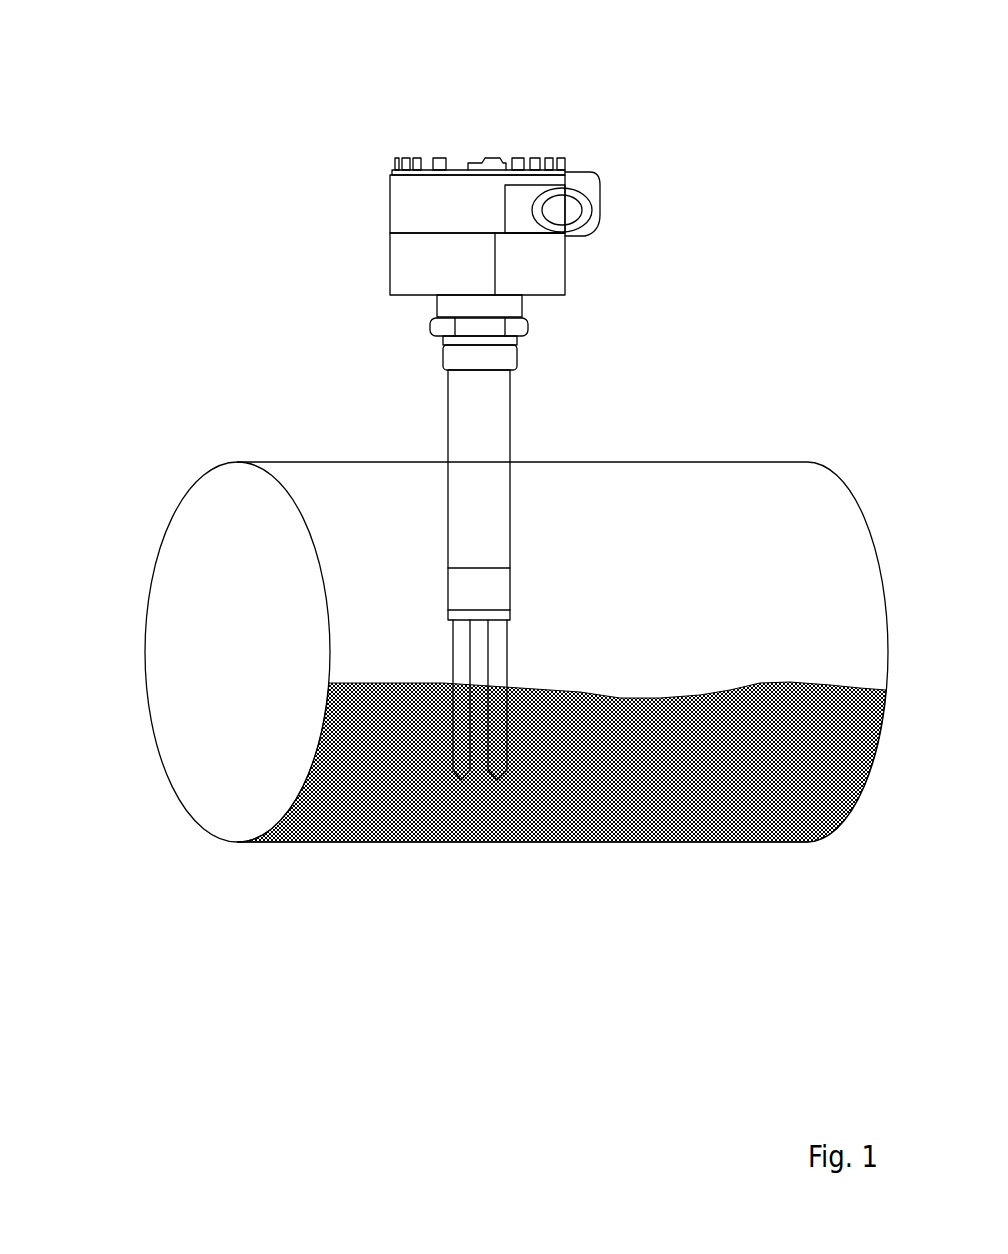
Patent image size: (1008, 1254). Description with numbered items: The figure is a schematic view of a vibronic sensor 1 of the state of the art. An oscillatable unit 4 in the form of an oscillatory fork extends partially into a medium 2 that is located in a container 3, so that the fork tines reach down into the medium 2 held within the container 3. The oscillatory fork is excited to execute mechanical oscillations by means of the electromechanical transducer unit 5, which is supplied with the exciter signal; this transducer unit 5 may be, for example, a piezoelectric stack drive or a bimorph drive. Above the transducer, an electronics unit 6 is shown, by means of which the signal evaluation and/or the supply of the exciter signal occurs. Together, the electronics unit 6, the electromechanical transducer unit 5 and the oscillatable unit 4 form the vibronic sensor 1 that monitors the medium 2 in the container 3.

The vibronic sensor 1 is at (33, 34).
The medium 2 is at (633, 767).
The container 3 is at (840, 818).
The oscillatable unit 4 is at (483, 708).
The electromechanical transducer unit 5 is at (452, 587).
The electronics unit 6 is at (543, 264).